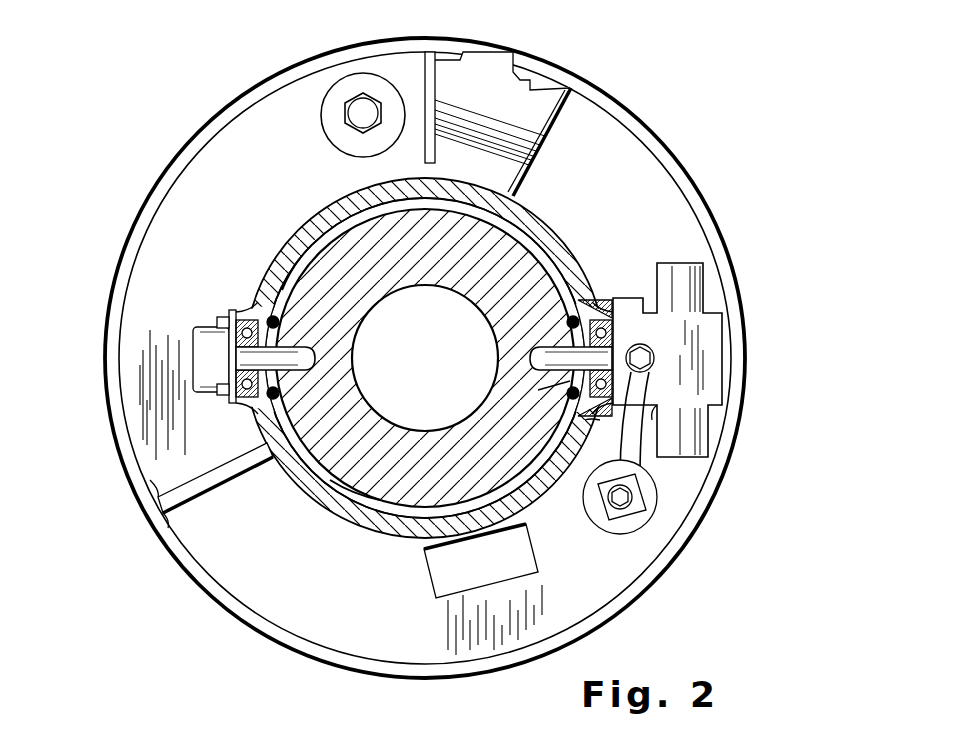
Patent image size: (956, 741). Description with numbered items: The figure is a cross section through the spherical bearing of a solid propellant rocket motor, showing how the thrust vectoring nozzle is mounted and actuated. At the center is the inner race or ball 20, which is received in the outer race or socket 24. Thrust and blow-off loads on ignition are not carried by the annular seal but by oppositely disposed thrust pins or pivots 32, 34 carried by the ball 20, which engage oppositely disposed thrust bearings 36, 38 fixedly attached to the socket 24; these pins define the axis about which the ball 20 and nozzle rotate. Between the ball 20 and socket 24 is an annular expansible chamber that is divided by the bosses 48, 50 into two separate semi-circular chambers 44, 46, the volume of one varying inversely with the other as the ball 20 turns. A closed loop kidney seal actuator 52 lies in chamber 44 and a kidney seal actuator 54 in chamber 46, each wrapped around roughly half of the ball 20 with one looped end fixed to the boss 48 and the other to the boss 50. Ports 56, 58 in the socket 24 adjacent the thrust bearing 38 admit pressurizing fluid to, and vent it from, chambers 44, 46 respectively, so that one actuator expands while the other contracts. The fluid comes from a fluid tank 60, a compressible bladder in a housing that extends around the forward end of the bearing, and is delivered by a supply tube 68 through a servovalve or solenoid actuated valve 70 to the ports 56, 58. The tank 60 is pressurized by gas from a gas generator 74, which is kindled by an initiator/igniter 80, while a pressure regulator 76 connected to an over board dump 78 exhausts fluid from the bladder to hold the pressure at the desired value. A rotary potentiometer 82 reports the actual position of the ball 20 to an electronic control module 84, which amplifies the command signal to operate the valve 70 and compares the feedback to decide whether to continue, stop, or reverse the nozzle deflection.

The inner race or ball 20 is at (368, 250).
The outer race or socket 24 is at (535, 233).
The thrust pin or pivot 32 is at (290, 300).
The thrust pin or pivot 34 is at (568, 313).
The thrust bearing 36 is at (232, 311).
The thrust bearing 38 is at (605, 300).
The semi-circular chamber 44 is at (350, 497).
The semi-circular chamber 46 is at (322, 240).
The boss 48 is at (240, 402).
The boss 50 is at (538, 390).
The kidney seal actuator 52 is at (265, 443).
The kidney seal actuator 54 is at (262, 312).
The port 56 is at (588, 405).
The port 58 is at (587, 320).
The fluid tank 60 is at (320, 617).
The supply tube 68 is at (645, 458).
The servovalve or solenoid actuated valve 70 is at (705, 348).
The gas generator 74 is at (185, 215).
The pressure regulator 76 is at (512, 117).
The over board dump 78 is at (490, 73).
The initiator/igniter 80 is at (350, 100).
The rotary potentiometer 82 is at (205, 343).
The electronic control module 84 is at (455, 572).